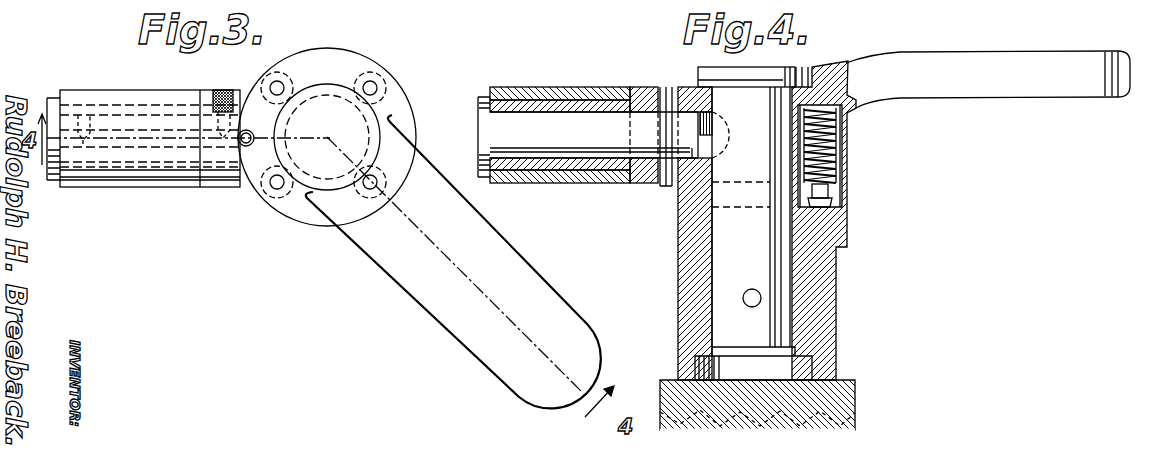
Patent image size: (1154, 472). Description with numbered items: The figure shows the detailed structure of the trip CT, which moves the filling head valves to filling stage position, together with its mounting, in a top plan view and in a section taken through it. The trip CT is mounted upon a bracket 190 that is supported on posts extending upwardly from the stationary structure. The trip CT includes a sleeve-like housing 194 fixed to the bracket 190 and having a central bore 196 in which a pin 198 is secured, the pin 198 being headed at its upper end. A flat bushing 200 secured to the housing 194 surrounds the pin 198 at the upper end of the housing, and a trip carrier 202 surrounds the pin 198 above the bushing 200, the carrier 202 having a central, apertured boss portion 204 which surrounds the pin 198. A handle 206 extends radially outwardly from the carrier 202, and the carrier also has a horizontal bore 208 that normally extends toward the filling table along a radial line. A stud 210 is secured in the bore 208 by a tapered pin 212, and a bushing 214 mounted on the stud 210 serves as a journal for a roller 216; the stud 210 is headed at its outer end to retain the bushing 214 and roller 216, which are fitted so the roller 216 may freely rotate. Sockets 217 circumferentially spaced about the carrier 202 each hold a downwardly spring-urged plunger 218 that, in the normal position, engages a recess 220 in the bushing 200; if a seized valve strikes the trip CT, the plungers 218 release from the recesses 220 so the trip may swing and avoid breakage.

In FIG. 4, the bracket 190 is at (841, 378).
In FIG. 4, the housing 194 is at (818, 283).
In FIG. 4, the central bore 196 is at (790, 251).
In FIG. 4, the pin 198 is at (727, 250).
In FIG. 4, the bushing 200 is at (845, 191).
In FIG. 4, the trip carrier 202 is at (847, 131).
In FIG. 4, the boss portion 204 is at (686, 178).
In FIG. 3, the handle 206 is at (466, 318).
In FIG. 4, the handle 206 is at (978, 58).
In FIG. 4, the horizontal bore 208 is at (642, 114).
In FIG. 4, the stud 210 is at (553, 140).
In FIG. 4, the tapered pin 212 is at (667, 92).
In FIG. 4, the bushing 214 is at (585, 165).
In FIG. 3, the roller 216 is at (85, 185).
In FIG. 4, the roller 216 is at (561, 95).
In FIG. 3, the sockets 217 is at (376, 80).
In FIG. 4, the plunger 218 is at (842, 158).
In FIG. 4, the recess 220 is at (844, 208).
In FIG. 3, the trip CT is at (143, 188).
In FIG. 4, the trip CT is at (572, 88).